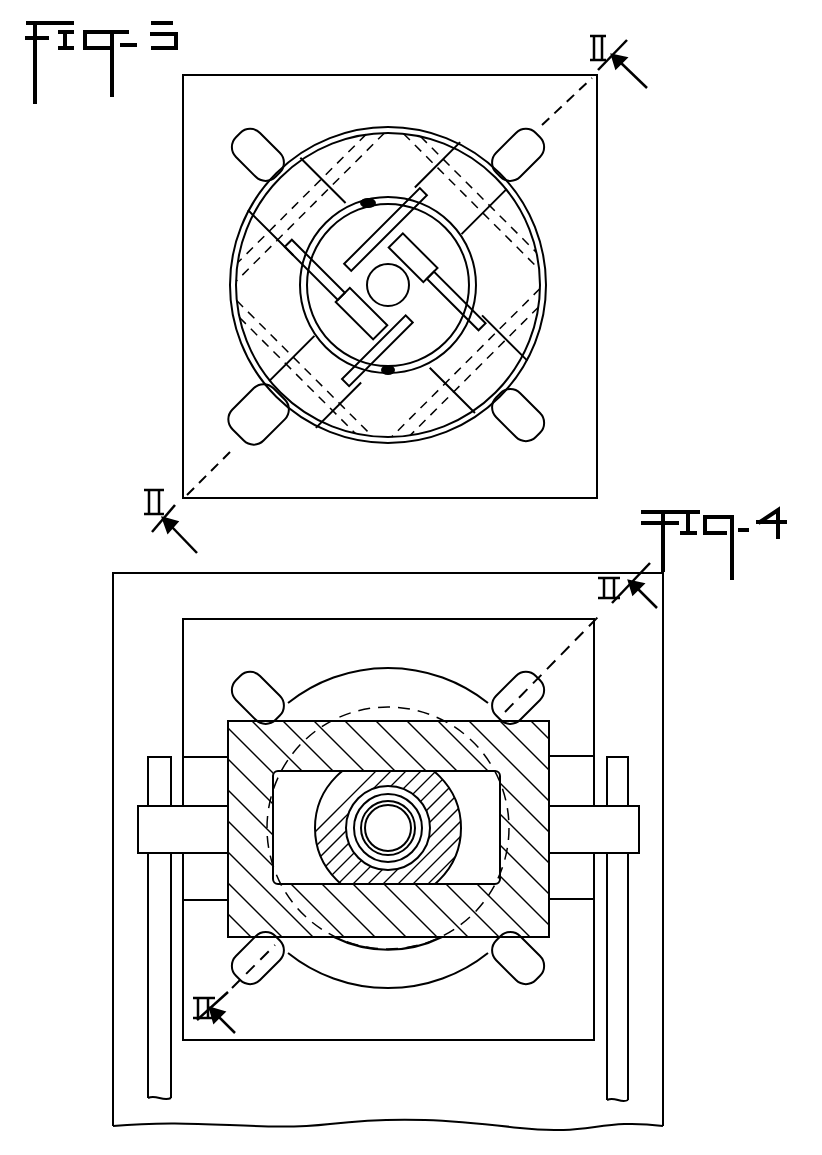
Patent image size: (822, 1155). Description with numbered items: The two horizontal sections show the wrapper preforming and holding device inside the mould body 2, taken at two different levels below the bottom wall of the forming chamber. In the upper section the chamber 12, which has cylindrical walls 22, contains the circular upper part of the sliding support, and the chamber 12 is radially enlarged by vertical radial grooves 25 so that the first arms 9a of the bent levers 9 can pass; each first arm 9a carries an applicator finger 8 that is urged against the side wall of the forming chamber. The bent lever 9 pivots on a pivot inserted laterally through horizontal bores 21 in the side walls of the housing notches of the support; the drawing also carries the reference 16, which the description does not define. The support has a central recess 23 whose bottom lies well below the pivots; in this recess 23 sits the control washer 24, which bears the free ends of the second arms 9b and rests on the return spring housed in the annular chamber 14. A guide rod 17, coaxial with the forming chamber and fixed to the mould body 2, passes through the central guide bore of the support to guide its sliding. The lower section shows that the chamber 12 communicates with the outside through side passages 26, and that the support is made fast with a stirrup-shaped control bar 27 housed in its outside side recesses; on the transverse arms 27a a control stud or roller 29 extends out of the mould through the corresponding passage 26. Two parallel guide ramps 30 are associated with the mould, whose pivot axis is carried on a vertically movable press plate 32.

In FIG. 3, the mould body 2 is at (597, 205).
In FIG. 4, the mould body 2 is at (498, 622).
In FIG. 3, the applicator fingers 8 is at (268, 438).
In FIG. 3, the bent lever 9 is at (490, 197).
In FIG. 3, the first arm 9a is at (290, 380).
In FIG. 3, the second arm 9b is at (402, 292).
In FIG. 4, the chamber 12 is at (416, 697).
In FIG. 4, the annular chamber 14 is at (425, 822).
In FIG. 3, the arm strip 16 is at (312, 285).
In FIG. 3, the guide rod 17 is at (390, 306).
In FIG. 4, the guide rod 17 is at (388, 842).
In FIG. 3, the horizontal bores 21 is at (345, 158).
In FIG. 3, the cylindrical walls 22 is at (455, 150).
In FIG. 4, the cylindrical walls 22 is at (355, 684).
In FIG. 3, the central recess 23 is at (369, 203).
In FIG. 3, the control washer 24 is at (452, 273).
In FIG. 3, the vertical radial grooves 25 is at (255, 138).
In FIG. 4, the vertical radial grooves 25 is at (265, 688).
In FIG. 4, the side passages 26 is at (200, 892).
In FIG. 4, the control bar 27 is at (276, 938).
In FIG. 4, the transverse arms 27a is at (540, 848).
In FIG. 4, the control stud or roller 29 is at (138, 830).
In FIG. 4, the guide ramps 30 is at (158, 948).
In FIG. 4, the press plate 32 is at (650, 1073).